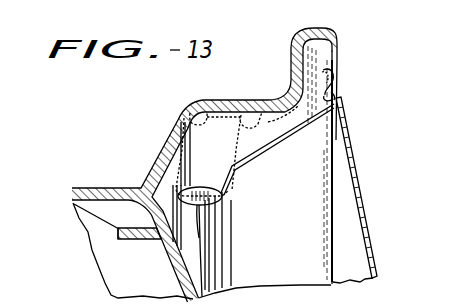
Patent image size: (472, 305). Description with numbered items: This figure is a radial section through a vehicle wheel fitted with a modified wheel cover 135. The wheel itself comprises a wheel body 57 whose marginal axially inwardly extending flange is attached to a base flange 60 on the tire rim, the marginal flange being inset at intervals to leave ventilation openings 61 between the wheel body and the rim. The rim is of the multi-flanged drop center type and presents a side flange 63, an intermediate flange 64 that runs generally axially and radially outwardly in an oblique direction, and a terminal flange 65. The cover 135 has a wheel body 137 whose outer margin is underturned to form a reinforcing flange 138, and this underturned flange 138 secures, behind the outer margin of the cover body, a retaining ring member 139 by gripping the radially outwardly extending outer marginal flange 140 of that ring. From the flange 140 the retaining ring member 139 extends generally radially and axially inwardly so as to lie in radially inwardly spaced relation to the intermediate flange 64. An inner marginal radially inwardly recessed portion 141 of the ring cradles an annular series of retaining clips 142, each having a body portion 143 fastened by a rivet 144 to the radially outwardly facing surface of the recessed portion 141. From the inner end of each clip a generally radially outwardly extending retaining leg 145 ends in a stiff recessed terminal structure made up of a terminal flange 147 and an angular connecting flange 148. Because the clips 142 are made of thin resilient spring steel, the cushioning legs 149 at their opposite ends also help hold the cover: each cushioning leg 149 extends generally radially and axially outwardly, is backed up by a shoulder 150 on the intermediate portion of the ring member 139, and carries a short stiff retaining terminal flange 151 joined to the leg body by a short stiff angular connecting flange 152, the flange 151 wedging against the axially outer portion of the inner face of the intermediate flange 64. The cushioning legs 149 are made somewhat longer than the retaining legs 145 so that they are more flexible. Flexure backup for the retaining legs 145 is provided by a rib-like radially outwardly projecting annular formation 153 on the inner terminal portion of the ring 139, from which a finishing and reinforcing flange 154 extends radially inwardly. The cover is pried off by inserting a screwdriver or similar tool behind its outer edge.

The wheel body 57 is at (184, 287).
The base flange 60 is at (88, 188).
The ventilation openings 61 is at (118, 213).
The side flange 63 is at (168, 133).
The intermediate flange 64 is at (233, 100).
The terminal flange 65 is at (326, 30).
The wheel cover 135 is at (368, 222).
The wheel body of cover 137 is at (356, 176).
The underturned reinforcing flange 138 is at (324, 70).
The retaining ring member 139 is at (340, 265).
The outer marginal flange 140 is at (333, 97).
The radially inwardly recessed portion 141 is at (212, 237).
The retaining clips 142 is at (168, 180).
The body portion 143 is at (196, 155).
The rivet 144 is at (200, 192).
The retaining leg 145 is at (231, 141).
The terminal flange 147 is at (213, 100).
The angular connecting flange 148 is at (197, 107).
The cushioning leg 149 is at (238, 131).
The shoulder 150 is at (233, 184).
The retaining terminal flange 151 is at (270, 110).
The angular connecting flange 152 is at (232, 108).
The rib-like annular formation 153 is at (135, 239).
The finishing and reinforcing flange 154 is at (200, 240).